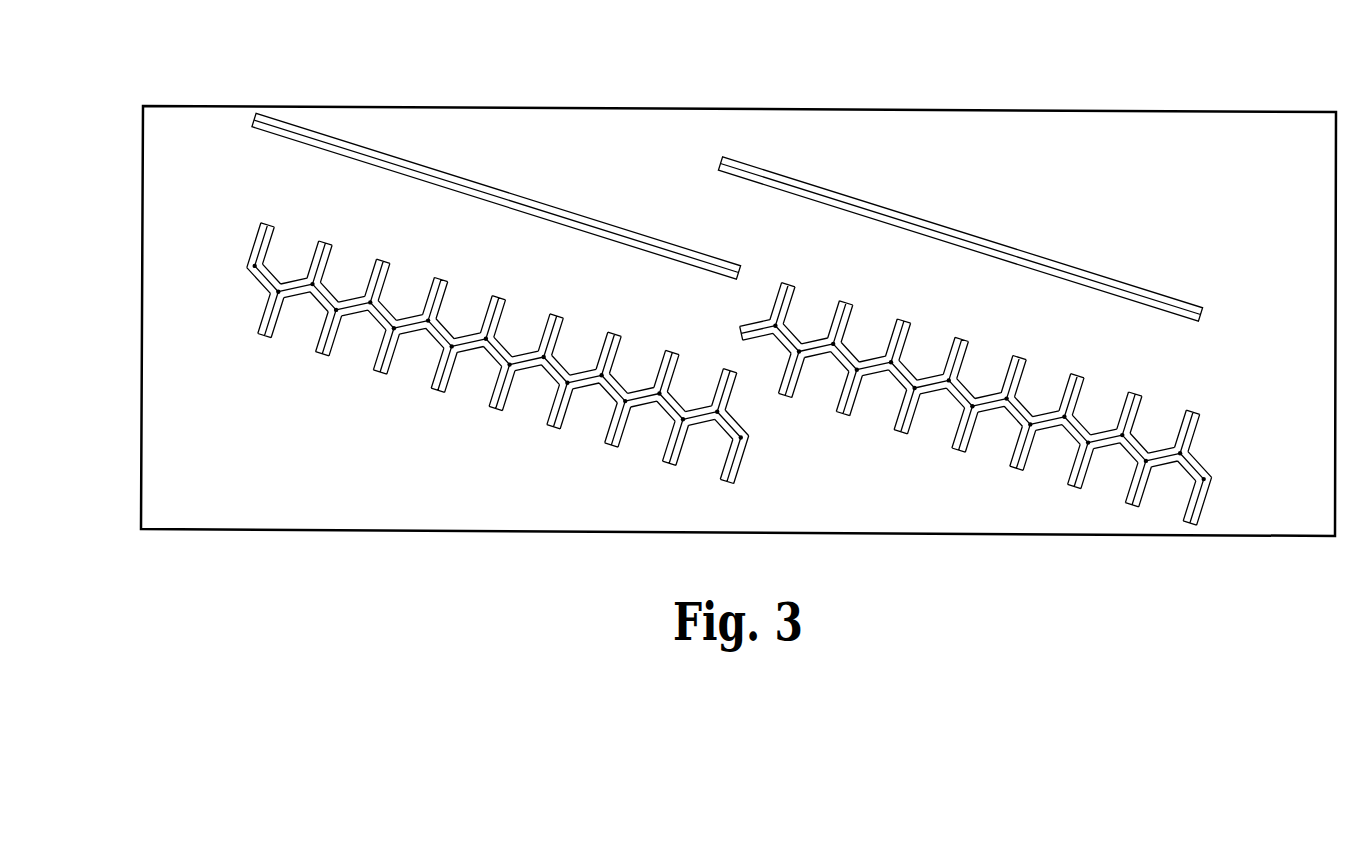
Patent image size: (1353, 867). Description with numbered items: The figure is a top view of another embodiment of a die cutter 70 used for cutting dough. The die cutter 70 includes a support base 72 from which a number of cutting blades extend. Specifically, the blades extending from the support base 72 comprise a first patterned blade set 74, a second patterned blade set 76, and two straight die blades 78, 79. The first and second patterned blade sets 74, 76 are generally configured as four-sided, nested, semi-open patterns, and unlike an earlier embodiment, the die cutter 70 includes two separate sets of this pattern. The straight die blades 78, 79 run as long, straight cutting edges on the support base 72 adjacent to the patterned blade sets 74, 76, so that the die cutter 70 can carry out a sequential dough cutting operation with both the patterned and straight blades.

The die cutter 70 is at (1005, 104).
The support base 72 is at (1142, 140).
The first patterned blade set 74 is at (253, 246).
The second patterned blade set 76 is at (784, 285).
The straight die blade 78 is at (304, 138).
The straight die blade 79 is at (874, 212).